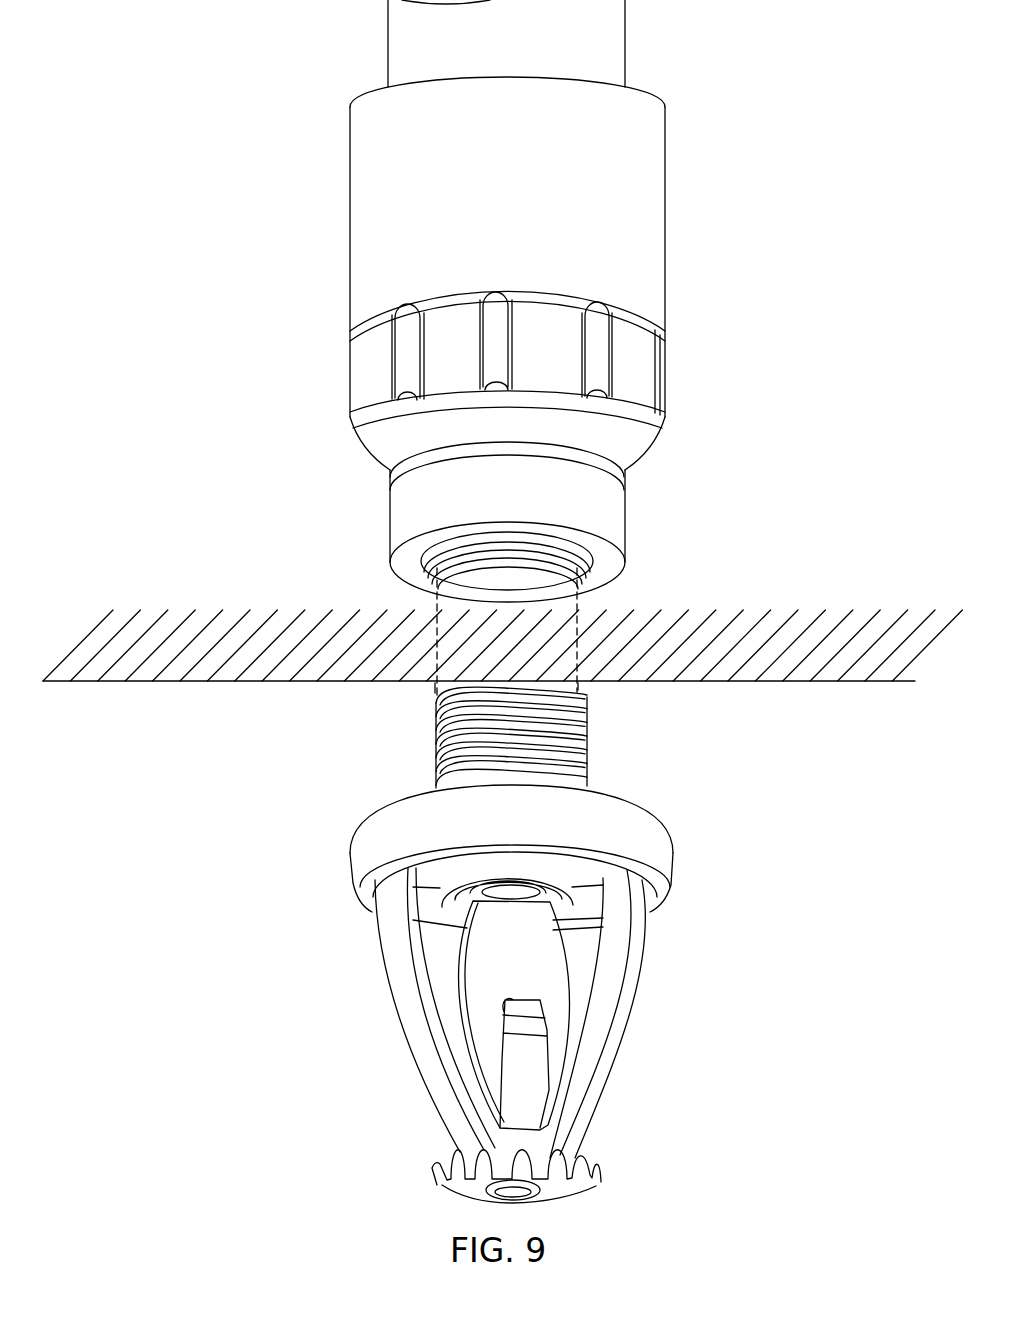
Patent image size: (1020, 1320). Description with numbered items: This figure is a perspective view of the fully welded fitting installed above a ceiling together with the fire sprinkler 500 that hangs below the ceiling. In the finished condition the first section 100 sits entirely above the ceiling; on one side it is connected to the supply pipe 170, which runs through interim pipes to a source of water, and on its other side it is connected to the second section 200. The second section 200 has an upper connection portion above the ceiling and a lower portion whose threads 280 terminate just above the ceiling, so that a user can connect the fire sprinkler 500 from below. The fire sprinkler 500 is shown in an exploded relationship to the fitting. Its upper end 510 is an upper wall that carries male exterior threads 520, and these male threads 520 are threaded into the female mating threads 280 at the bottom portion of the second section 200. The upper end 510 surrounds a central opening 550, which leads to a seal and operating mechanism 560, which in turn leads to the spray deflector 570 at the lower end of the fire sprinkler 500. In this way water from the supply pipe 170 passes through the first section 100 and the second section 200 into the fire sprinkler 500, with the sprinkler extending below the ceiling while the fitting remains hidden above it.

The first section 100 is at (683, 178).
The supply pipe 170 is at (625, 40).
The second section 200 is at (631, 513).
The threads 280 is at (578, 567).
The fire sprinkler 500 is at (775, 715).
The upper end 510 is at (588, 755).
The male threads 520 is at (432, 744).
The central opening 550 is at (507, 887).
The seal and operating mechanism 560 is at (530, 973).
The spray deflector 570 is at (430, 1162).